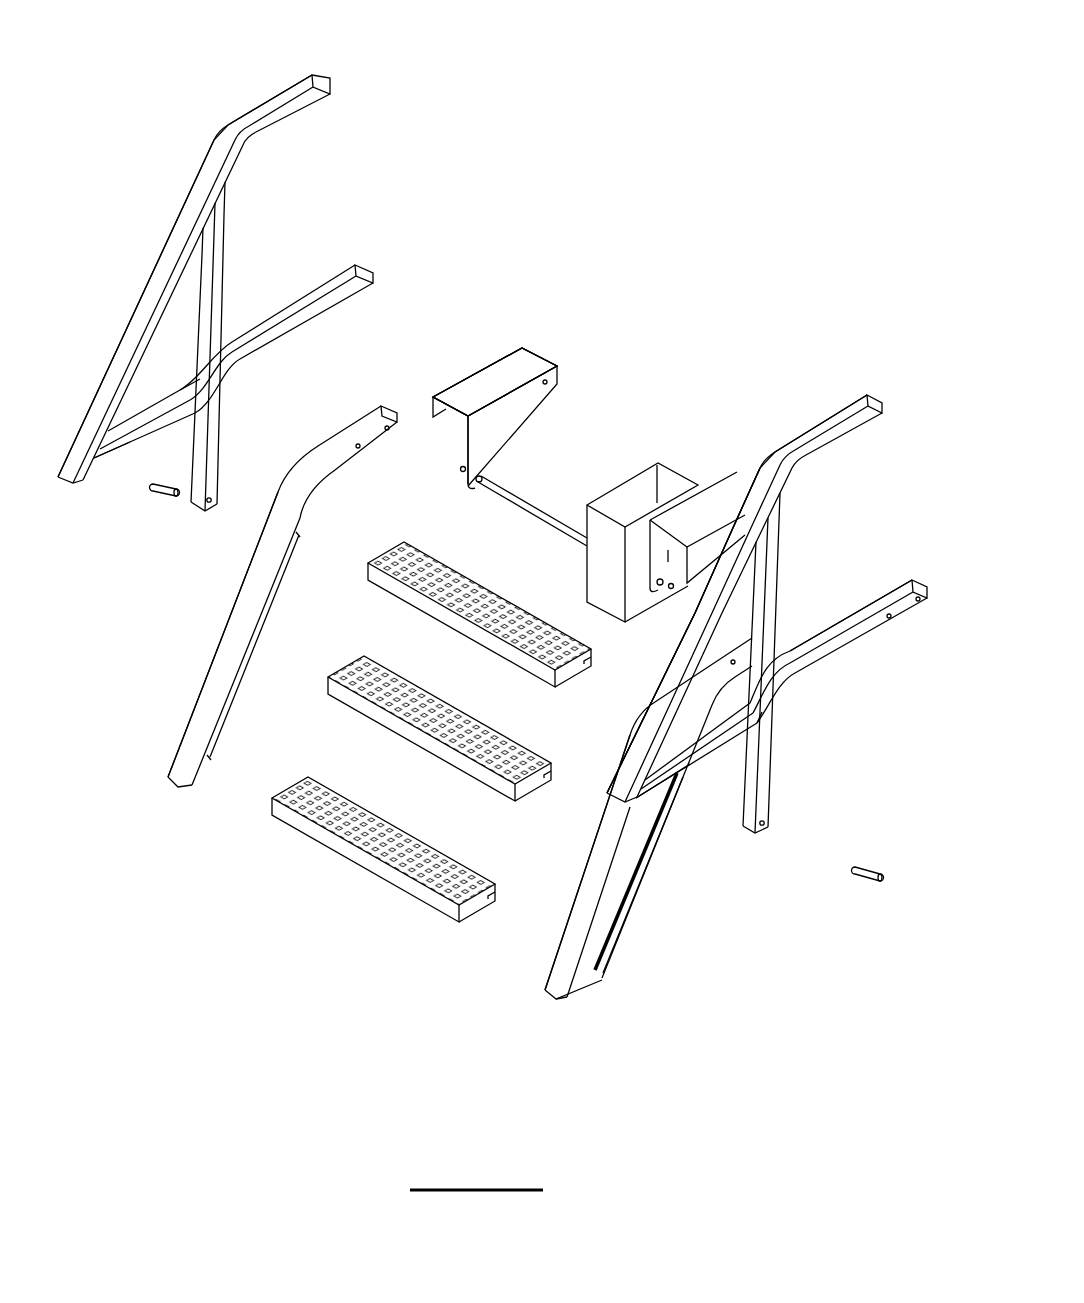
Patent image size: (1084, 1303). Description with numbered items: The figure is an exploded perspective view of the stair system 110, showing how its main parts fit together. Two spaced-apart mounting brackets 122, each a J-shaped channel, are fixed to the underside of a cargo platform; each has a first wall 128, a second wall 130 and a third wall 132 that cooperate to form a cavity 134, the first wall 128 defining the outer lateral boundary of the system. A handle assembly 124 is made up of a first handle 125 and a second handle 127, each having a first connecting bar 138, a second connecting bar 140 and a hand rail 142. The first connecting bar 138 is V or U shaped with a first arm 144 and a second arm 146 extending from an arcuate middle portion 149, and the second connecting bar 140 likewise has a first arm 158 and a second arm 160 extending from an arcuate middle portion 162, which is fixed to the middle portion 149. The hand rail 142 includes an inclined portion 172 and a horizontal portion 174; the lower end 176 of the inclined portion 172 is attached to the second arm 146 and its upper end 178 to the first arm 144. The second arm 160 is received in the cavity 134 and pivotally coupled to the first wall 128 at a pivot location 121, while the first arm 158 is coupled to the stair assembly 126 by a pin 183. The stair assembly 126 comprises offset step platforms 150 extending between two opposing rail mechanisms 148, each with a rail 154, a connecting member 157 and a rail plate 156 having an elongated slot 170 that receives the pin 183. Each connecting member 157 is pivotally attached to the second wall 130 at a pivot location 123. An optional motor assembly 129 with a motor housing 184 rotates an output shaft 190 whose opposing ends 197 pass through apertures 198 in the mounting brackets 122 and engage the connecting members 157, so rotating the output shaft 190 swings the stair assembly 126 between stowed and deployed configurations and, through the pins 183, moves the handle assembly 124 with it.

The stair system 110 is at (740, 303).
The pivot location 121 is at (550, 366).
The mounting bracket 122 is at (541, 346).
The pivot location 123 is at (420, 384).
The handle assembly 124 is at (853, 667).
The first handle 125 is at (348, 84).
The stair assembly 126 is at (298, 843).
The second handle 127 is at (879, 392).
The first wall 128 is at (442, 403).
The motor assembly 129 is at (643, 462).
The second wall 130 is at (527, 407).
The third wall 132 is at (521, 356).
The cavity 134 is at (453, 420).
The first connecting bar 138 is at (232, 238).
The second connecting bar 140 is at (282, 350).
The hand rail 142 is at (186, 195).
The first arm 144 is at (228, 210).
The second arm 146 is at (142, 470).
The rail mechanism 148 is at (205, 676).
The arcuate middle portion 149 is at (210, 365).
The step platform 150 is at (470, 587).
The rail 154 is at (238, 623).
The rail plate 156 is at (250, 650).
The connecting member 157 is at (360, 413).
The first arm 158 is at (190, 502).
The second arm 160 is at (357, 270).
The arcuate middle portion 162 is at (220, 387).
The elongated slot 170 is at (627, 906).
The inclined portion 172 is at (158, 278).
The horizontal portion 174 is at (313, 80).
The lower end 176 is at (93, 420).
The upper end 178 is at (218, 150).
The pin 183 is at (165, 484).
The motor housing 184 is at (663, 468).
The output shaft 190 is at (545, 514).
The opposing ends 197 is at (460, 472).
The aperture 198 is at (474, 486).